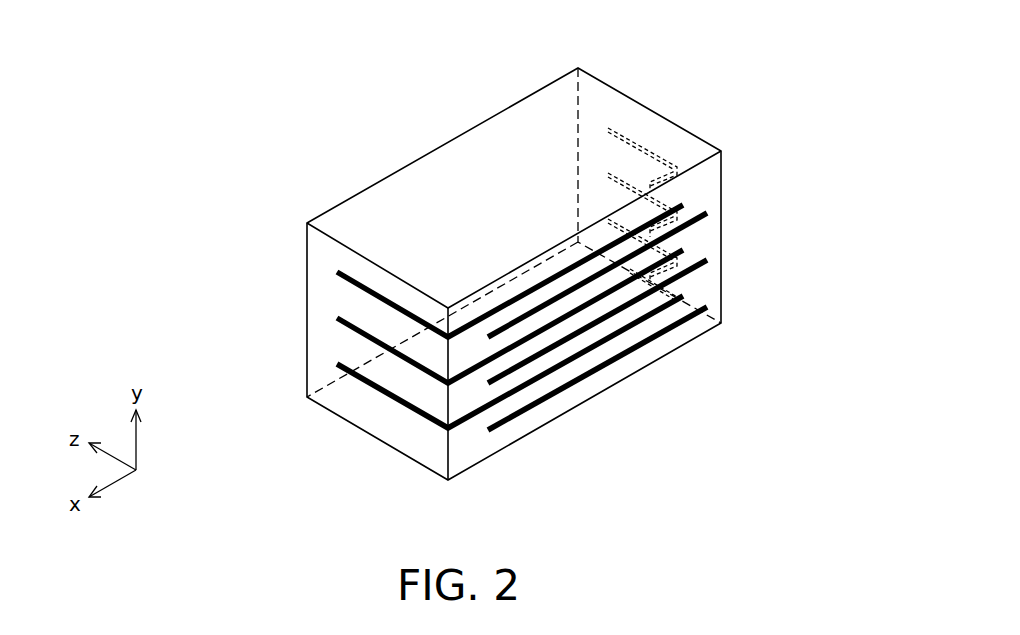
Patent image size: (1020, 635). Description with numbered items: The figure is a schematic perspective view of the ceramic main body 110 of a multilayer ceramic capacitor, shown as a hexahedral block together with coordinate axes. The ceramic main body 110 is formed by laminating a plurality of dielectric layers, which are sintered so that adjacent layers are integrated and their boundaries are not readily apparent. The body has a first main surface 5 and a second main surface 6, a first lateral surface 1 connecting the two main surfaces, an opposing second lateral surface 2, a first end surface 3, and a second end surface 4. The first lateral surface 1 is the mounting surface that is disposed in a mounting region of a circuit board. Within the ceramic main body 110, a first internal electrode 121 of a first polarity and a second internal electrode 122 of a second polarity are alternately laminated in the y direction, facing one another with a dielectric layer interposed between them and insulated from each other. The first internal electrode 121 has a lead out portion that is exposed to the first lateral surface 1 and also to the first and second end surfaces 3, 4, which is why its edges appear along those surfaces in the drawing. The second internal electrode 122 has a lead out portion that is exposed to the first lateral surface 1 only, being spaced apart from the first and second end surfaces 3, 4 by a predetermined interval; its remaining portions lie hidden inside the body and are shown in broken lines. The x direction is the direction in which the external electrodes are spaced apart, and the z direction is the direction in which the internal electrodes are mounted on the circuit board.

The first lateral surface 1 is at (633, 365).
The second lateral surface 2 is at (380, 228).
The first end surface 3 is at (314, 347).
The second end surface 4 is at (629, 132).
The first main surface 5 is at (486, 157).
The second main surface 6 is at (374, 423).
The ceramic main body 110 is at (317, 273).
The first internal electrode 121 is at (360, 285).
The second internal electrode 122 is at (707, 213).